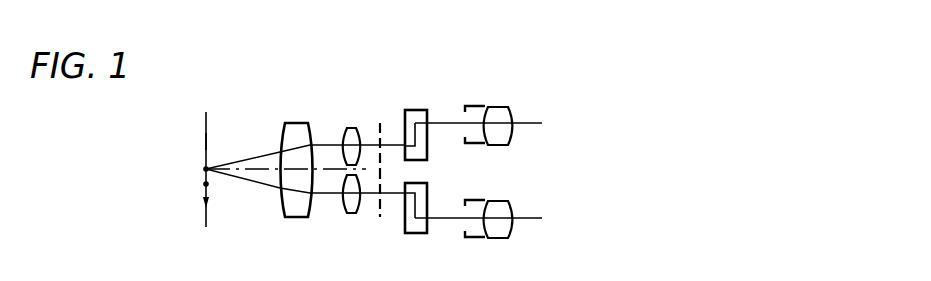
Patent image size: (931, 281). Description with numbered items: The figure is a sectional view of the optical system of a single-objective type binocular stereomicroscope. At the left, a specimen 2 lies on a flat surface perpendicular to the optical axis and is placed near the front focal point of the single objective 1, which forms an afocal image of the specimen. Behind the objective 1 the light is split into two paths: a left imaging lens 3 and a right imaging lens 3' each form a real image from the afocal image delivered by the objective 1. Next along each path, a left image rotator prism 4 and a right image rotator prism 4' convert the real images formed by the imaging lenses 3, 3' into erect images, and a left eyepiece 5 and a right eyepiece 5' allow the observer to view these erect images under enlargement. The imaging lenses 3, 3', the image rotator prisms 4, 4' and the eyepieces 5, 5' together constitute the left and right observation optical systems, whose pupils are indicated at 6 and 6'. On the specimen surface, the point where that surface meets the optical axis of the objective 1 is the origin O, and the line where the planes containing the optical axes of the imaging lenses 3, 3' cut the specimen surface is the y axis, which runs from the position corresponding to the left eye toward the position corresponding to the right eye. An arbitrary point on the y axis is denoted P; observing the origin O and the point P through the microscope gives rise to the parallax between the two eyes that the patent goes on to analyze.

The objective 1 is at (297, 124).
The specimen 2 is at (207, 122).
The left imaging lens 3 is at (353, 123).
The right imaging lens 3' is at (353, 222).
The left image rotator prism 4 is at (421, 120).
The right image rotator prism 4' is at (423, 226).
The left eyepiece 5 is at (490, 111).
The right eyepiece 5' is at (494, 233).
The pupil of the left observation optical system 6 is at (388, 125).
The pupil of the right observation optical system 6' is at (390, 219).
The origin O is at (206, 169).
The arbitrary point on the y axis P is at (208, 185).
The y axis y is at (206, 150).